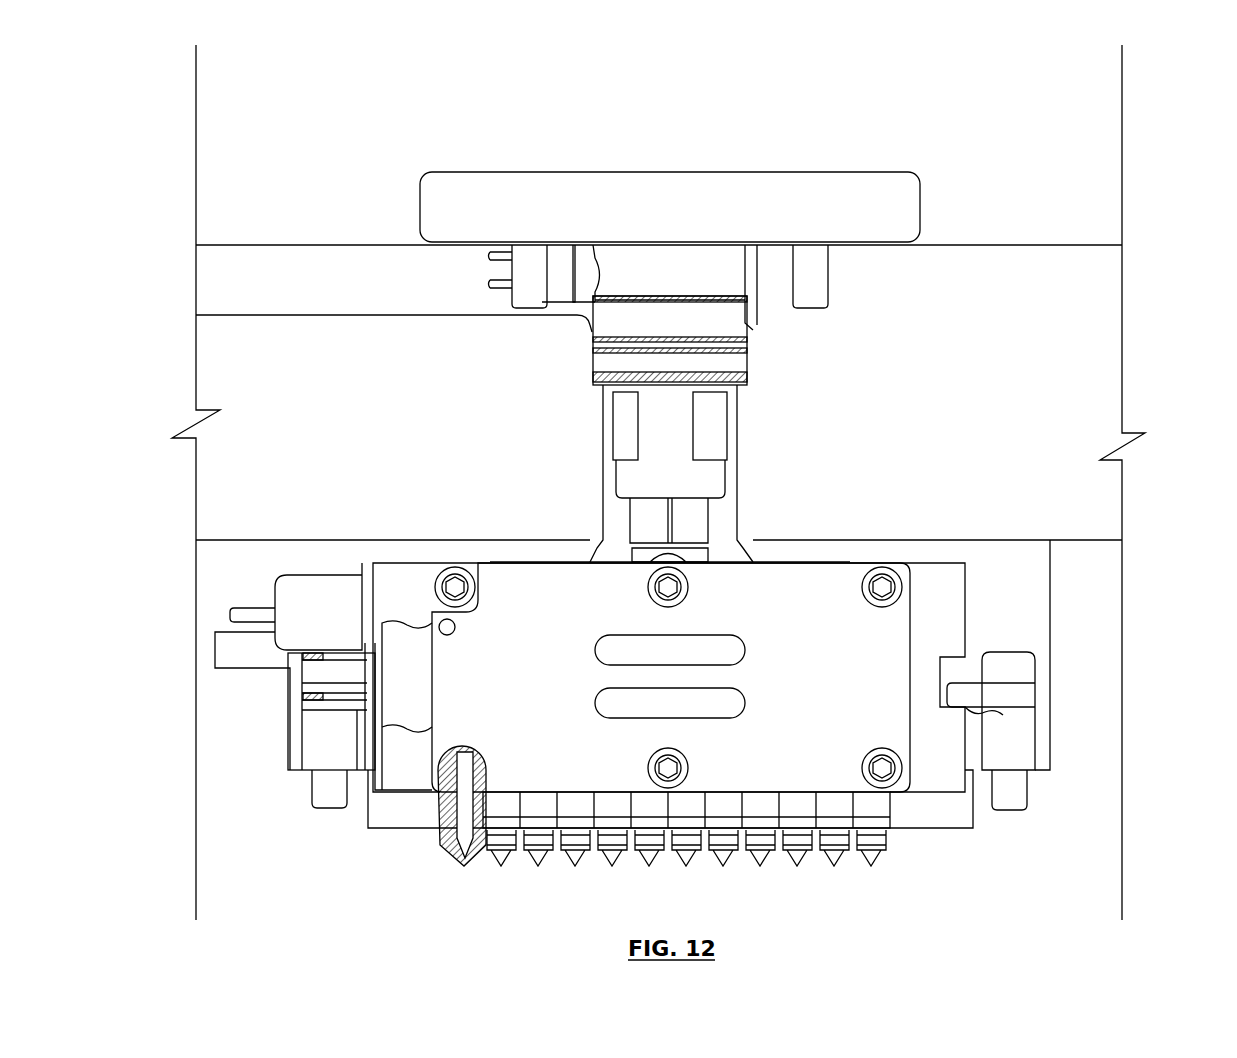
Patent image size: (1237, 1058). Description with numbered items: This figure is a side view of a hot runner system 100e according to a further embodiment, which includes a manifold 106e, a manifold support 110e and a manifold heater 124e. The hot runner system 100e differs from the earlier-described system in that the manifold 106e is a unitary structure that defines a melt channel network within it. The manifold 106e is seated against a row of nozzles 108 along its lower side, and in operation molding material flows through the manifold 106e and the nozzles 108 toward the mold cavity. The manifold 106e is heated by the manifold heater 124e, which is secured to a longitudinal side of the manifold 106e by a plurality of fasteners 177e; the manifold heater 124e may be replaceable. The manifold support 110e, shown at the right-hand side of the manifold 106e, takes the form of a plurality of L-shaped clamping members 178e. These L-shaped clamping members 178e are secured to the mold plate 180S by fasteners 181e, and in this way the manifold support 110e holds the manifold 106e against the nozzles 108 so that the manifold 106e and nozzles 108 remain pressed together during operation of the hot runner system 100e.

The hot runner system 100e is at (358, 456).
The fasteners 177e is at (435, 585).
The fasteners 181e is at (315, 668).
The manifold heater 124e is at (450, 723).
The mold plate 180S is at (243, 770).
The nozzles 108 is at (438, 798).
The manifold 106e is at (940, 627).
The L-shaped clamping members 178e is at (973, 693).
The manifold support 110e is at (1046, 738).